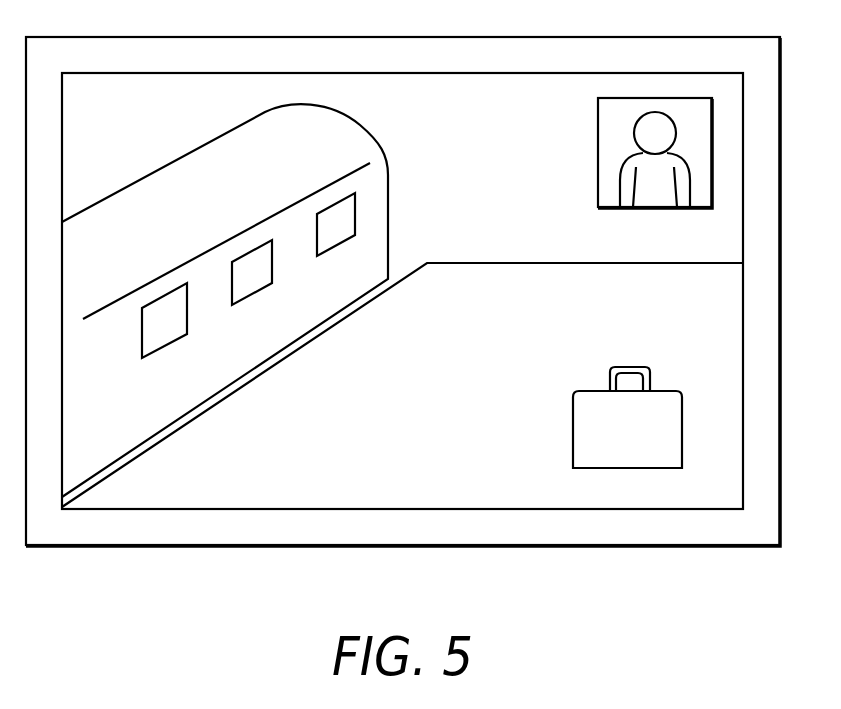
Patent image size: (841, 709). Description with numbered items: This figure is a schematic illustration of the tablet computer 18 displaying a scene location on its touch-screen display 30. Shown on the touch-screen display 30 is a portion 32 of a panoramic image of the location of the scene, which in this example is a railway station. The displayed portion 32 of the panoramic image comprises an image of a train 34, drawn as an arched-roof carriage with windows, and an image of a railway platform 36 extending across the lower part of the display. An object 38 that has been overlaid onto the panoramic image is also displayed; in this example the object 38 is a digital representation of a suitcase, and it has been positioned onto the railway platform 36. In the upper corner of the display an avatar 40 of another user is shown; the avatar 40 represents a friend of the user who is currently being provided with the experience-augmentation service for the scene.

The tablet computer 18 is at (763, 37).
The touch-screen display 30 is at (577, 73).
The portion of the panoramic image 32 is at (124, 125).
The train 34 is at (364, 127).
The railway platform 36 is at (482, 263).
The object 38 is at (573, 432).
The avatar 40 is at (598, 150).